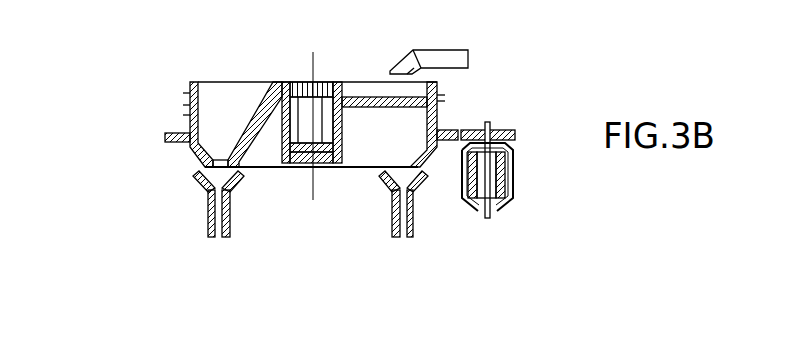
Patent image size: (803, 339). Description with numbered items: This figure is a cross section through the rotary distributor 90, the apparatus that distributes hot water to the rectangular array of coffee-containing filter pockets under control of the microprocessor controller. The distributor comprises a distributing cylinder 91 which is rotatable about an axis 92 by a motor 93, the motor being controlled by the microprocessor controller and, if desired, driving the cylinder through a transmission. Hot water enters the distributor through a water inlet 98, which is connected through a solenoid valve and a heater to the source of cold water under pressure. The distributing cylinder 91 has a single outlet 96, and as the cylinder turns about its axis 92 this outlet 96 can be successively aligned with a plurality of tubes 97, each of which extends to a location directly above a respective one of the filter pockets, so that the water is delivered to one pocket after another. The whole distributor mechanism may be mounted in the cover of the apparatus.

The rotary distributor 90 is at (140, 118).
The distributing cylinder 91 is at (190, 90).
The axis 92 is at (310, 183).
The motor 93 is at (510, 200).
The outlet 96 is at (218, 170).
The tubes 97 is at (210, 223).
The water inlet 98 is at (443, 55).